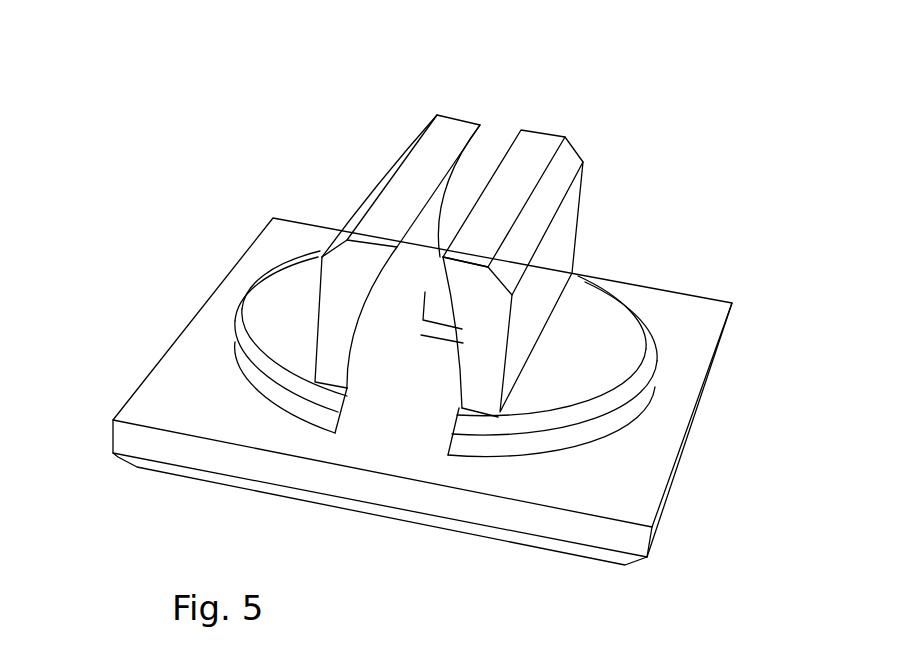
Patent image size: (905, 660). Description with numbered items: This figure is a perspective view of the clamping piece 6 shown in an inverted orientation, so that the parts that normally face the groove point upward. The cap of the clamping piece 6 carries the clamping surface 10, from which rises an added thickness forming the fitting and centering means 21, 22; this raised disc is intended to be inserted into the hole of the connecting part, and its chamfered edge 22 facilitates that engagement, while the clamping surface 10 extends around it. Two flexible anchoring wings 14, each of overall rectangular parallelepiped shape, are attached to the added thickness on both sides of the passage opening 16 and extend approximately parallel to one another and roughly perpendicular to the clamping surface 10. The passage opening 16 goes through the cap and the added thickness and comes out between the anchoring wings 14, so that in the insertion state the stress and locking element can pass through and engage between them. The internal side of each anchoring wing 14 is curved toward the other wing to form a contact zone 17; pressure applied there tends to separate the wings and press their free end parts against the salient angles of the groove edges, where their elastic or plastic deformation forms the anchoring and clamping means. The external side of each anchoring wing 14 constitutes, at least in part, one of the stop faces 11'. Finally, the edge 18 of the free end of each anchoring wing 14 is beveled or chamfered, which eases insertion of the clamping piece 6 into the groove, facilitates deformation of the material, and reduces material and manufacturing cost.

The clamping piece 6 is at (167, 222).
The clamping surface 10 is at (208, 378).
The stop faces 11' is at (436, 303).
The anchoring wings 14 is at (344, 199).
The passage opening 16 is at (393, 412).
The contact zones 17 is at (450, 287).
The beveled edges 18 is at (459, 298).
The fitting and centering means 21 is at (595, 373).
The chamfered edge 22 is at (562, 414).